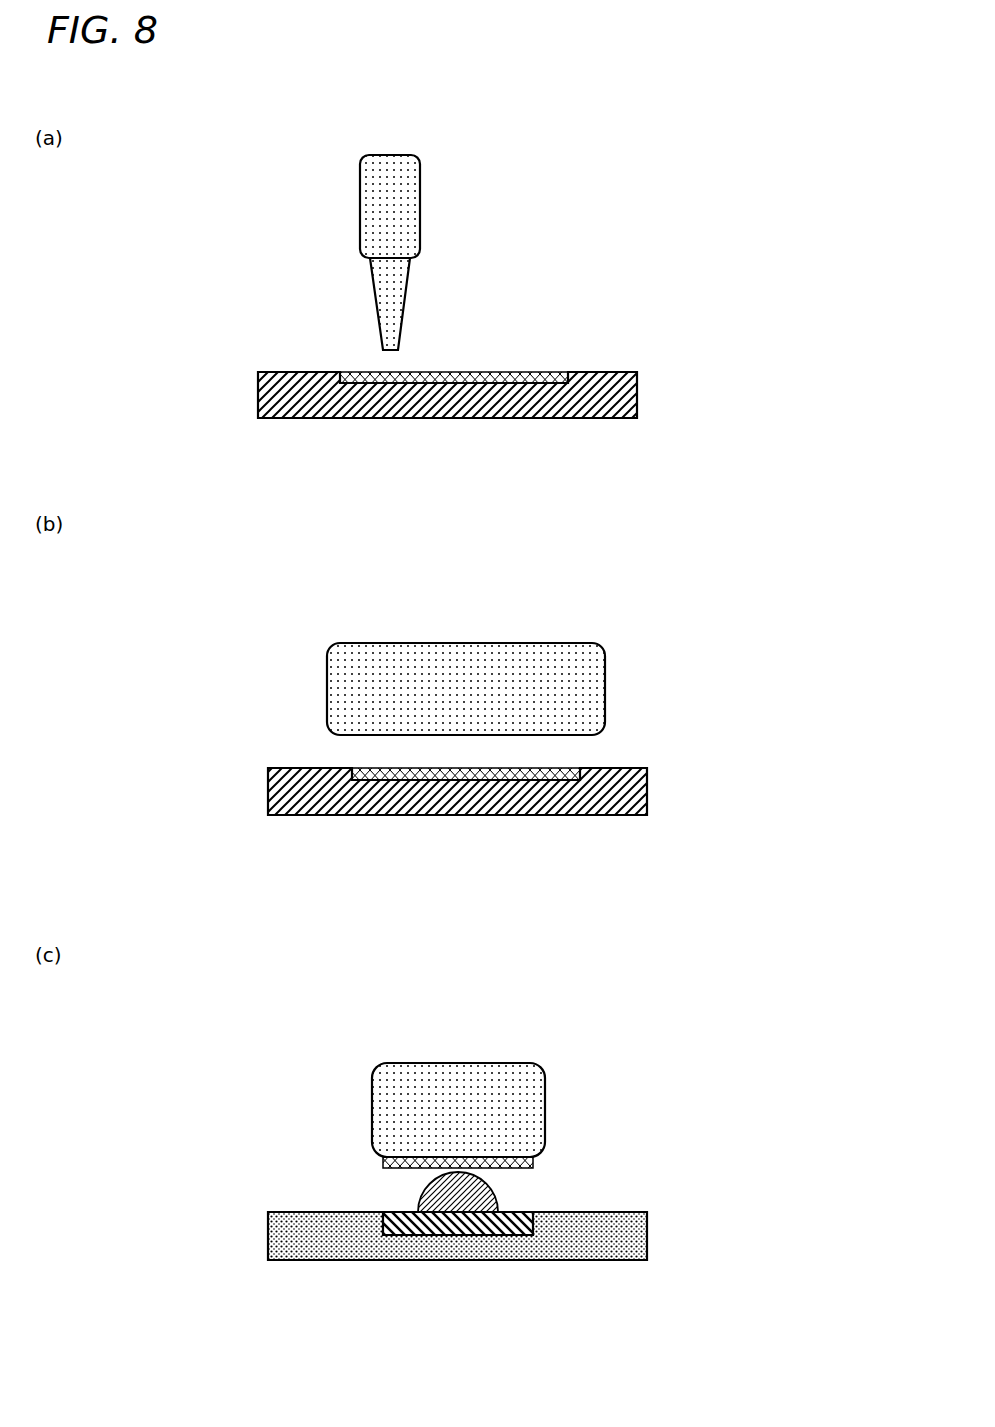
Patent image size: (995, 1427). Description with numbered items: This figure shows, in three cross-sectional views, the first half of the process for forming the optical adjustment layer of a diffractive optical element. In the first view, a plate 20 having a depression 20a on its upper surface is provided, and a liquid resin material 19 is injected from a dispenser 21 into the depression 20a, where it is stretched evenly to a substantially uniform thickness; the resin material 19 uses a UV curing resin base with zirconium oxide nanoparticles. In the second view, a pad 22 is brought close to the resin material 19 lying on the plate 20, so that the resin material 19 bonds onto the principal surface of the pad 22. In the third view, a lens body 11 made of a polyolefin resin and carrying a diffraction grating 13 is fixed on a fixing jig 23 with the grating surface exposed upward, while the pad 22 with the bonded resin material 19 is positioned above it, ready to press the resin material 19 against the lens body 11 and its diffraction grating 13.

The lens body 11 is at (490, 1223).
The diffraction grating 13 is at (497, 1202).
The resin material 19 is at (502, 371).
The plate 20 is at (637, 372).
The depression 20a is at (547, 371).
The dispenser 21 is at (383, 200).
The pad 22 is at (545, 667).
The fixing jig 23 is at (590, 1235).